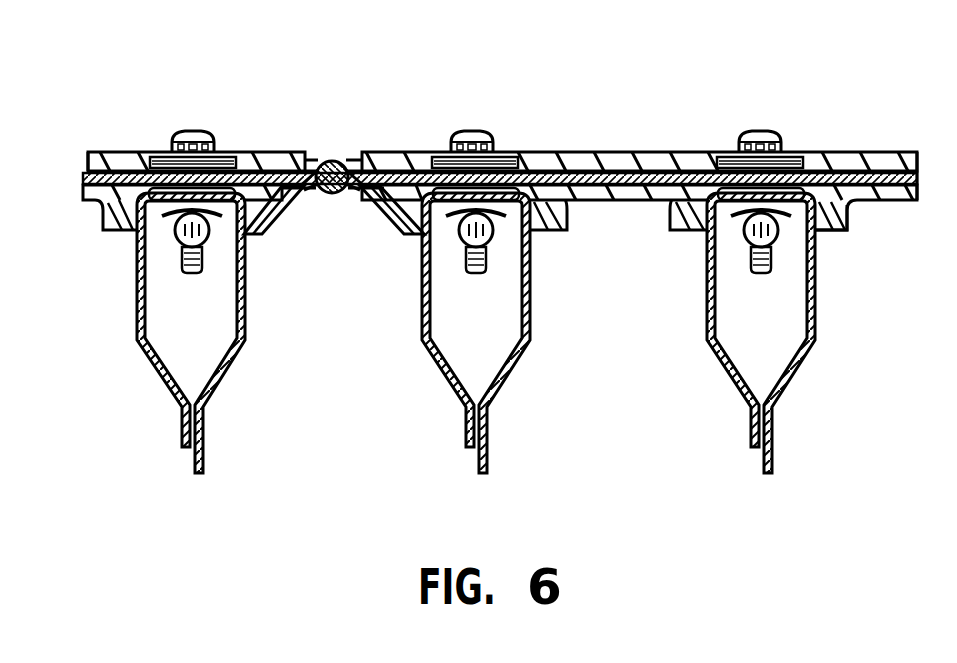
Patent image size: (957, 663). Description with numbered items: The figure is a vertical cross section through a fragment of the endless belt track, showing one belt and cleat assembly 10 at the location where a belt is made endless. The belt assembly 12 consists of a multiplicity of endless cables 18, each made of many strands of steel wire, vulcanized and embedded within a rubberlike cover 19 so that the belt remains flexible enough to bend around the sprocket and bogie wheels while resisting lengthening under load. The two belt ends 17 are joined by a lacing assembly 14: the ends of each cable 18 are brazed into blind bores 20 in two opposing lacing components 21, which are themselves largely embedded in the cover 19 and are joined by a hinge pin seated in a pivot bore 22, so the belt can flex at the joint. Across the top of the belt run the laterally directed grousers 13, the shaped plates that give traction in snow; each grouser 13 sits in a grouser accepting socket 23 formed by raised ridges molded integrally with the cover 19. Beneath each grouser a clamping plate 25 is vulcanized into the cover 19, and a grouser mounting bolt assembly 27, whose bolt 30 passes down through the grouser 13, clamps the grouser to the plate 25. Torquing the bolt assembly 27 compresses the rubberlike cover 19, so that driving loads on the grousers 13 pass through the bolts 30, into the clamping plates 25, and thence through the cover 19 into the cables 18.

The belt and cleat assembly 10 is at (140, 138).
The belt assembly 12 is at (252, 152).
The grouser 13 is at (790, 372).
The lacing assembly 14 is at (336, 165).
The belt end 17 is at (256, 222).
The cable 18 is at (108, 185).
The rubberlike cover 19 is at (873, 200).
The blind bore 20 is at (312, 162).
The lacing component 21 is at (300, 168).
The pivot bore 22 is at (328, 195).
The grouser accepting socket 23 is at (522, 262).
The clamping plate 25 is at (223, 157).
The grouser mounting bolt assembly 27 is at (178, 243).
The bolt 30 is at (465, 132).